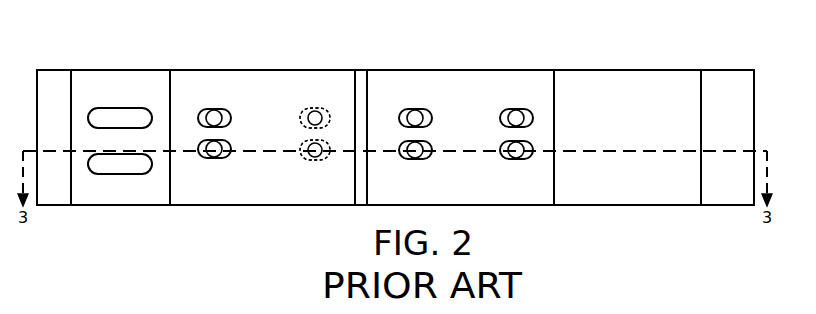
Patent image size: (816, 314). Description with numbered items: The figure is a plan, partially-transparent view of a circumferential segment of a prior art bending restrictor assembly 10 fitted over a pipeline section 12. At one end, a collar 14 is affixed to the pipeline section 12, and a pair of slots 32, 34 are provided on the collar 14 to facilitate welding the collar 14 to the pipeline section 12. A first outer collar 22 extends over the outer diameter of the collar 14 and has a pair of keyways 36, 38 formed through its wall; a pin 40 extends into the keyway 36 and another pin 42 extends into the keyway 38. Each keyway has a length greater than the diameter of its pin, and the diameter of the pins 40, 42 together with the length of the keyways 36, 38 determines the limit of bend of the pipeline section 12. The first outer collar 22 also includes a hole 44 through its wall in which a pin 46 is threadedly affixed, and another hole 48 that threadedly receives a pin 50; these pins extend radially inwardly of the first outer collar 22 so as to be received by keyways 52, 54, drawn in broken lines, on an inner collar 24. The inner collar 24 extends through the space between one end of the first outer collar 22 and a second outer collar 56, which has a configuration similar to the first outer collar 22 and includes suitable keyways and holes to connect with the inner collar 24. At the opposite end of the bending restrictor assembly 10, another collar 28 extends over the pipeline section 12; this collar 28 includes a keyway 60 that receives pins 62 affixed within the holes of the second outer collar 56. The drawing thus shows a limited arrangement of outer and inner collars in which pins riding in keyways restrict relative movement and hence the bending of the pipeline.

The bending restrictor assembly 10 is at (285, 51).
The pipeline section 12 is at (58, 69).
The collar 14 is at (95, 69).
The first outer collar 22 is at (195, 79).
The inner collar 24 is at (362, 77).
The collar 28 is at (598, 77).
The slot 32 is at (112, 110).
The slot 34 is at (122, 170).
The keyway 36 is at (230, 117).
The keyway 38 is at (232, 149).
The pin 40 is at (215, 115).
The pin 42 is at (215, 155).
The hole 44 is at (315, 111).
The pin 46 is at (325, 117).
The hole 48 is at (315, 158).
The pin 50 is at (303, 148).
The keyway 52 is at (301, 116).
The keyway 54 is at (303, 159).
The second outer collar 56 is at (410, 76).
The keyway 60 is at (502, 115).
The pins 62 is at (517, 115).